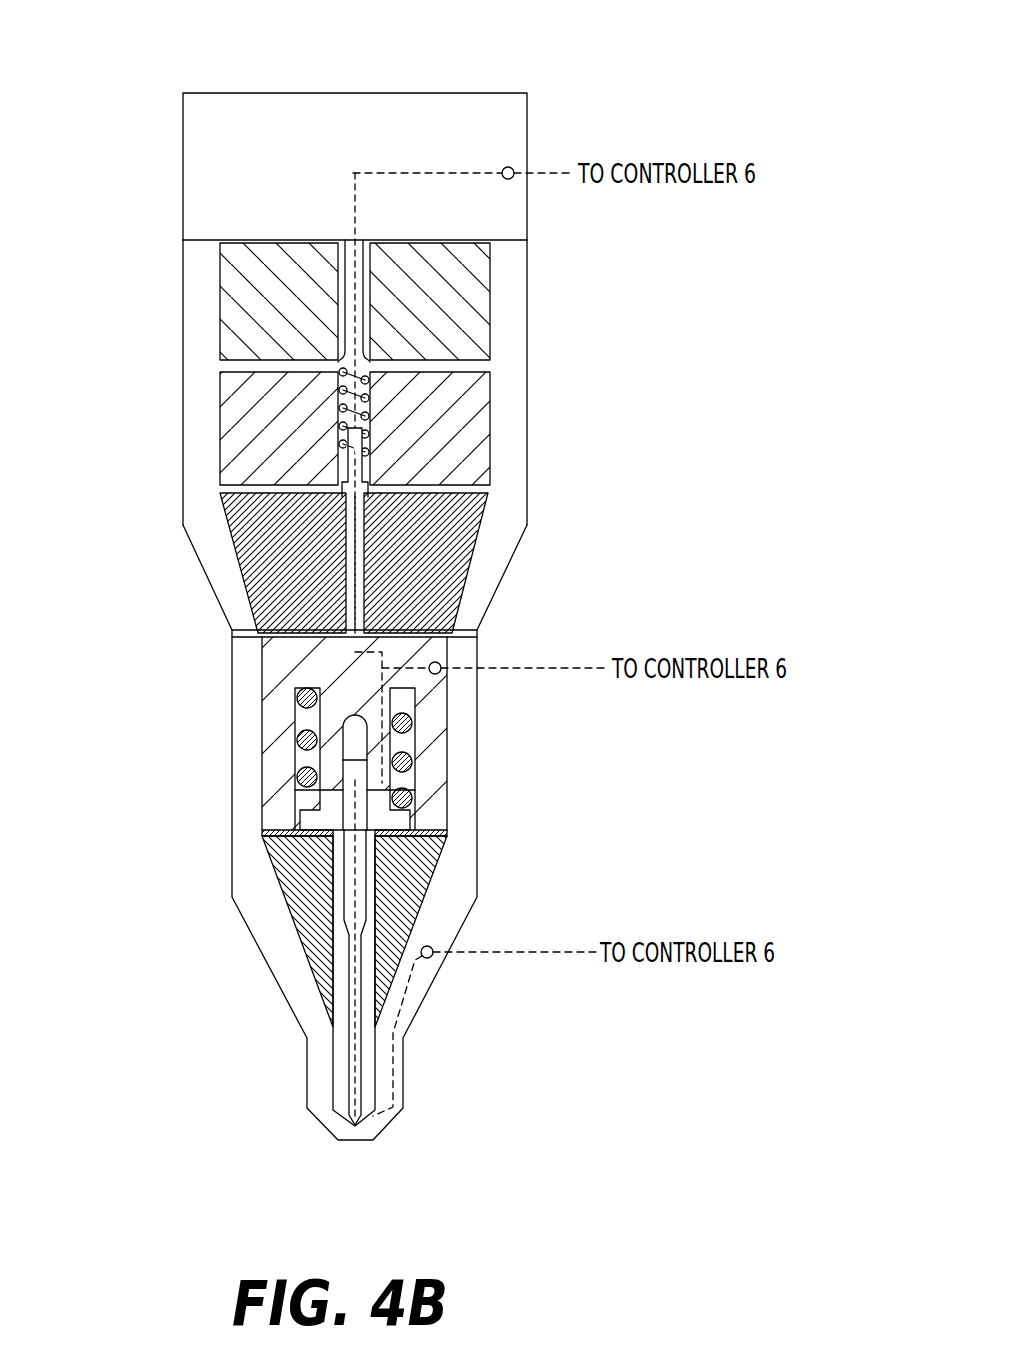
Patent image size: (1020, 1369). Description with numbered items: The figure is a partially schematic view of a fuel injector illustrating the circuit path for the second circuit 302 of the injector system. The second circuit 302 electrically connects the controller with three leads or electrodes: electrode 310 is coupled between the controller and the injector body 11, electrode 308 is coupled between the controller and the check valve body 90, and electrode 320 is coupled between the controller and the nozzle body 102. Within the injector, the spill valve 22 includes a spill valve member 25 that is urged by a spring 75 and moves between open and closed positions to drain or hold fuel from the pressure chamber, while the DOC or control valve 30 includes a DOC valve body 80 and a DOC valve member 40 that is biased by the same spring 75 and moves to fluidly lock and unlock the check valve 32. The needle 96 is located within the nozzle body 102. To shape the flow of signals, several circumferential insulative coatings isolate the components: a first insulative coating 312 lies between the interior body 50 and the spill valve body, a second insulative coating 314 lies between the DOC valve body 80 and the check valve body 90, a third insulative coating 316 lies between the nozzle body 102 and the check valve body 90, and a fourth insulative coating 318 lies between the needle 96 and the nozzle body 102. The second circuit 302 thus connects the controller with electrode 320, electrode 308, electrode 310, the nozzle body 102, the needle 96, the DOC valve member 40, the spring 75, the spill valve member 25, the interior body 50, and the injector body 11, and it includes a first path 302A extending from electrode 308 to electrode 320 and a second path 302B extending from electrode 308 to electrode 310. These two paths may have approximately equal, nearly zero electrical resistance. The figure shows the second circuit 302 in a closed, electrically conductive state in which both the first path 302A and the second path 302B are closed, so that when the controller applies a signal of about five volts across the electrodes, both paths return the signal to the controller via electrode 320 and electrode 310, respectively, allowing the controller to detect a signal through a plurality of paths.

The injector body 11 is at (510, 138).
The interior body 50 is at (207, 143).
The first insulative coating 312 is at (473, 235).
The second circuit 302 is at (640, 108).
The electrode 310 is at (548, 173).
The spill valve 22 is at (402, 327).
The spill valve member 25 is at (350, 312).
The spring 75 is at (370, 397).
The DOC valve member 40 is at (363, 470).
The DOC or control valve 30 is at (445, 532).
The second path 302B is at (353, 523).
The DOC valve body 80 is at (277, 580).
The second insulative coating 314 is at (447, 652).
The check valve body 90 is at (273, 753).
The electrode 308 is at (583, 668).
The first path 302A is at (383, 748).
The third insulative coating 316 is at (412, 833).
The nozzle body 102 is at (318, 943).
The check valve 32 is at (388, 868).
The fourth insulative coating 318 is at (366, 887).
The needle 96 is at (346, 892).
The electrode 320 is at (508, 955).